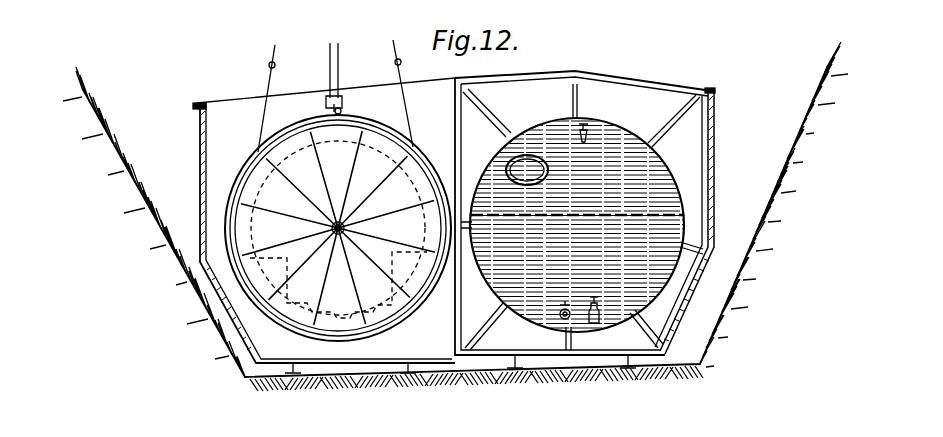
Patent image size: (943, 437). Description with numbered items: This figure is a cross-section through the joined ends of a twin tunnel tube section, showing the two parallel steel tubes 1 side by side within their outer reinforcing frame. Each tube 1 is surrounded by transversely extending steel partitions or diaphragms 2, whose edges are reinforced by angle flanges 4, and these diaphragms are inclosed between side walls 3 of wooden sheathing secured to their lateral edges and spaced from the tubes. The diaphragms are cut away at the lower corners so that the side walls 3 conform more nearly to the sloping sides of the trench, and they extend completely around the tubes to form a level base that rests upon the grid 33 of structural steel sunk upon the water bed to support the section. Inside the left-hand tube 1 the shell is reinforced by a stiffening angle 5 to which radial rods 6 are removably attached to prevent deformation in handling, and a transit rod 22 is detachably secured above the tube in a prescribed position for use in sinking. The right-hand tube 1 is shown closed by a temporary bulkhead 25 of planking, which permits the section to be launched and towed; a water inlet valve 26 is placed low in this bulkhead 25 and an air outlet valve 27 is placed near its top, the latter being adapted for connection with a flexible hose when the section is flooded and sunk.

The tube 1 is at (247, 298).
The partition or diaphragm 2 is at (213, 122).
The side wall 3 is at (203, 152).
The angle flange 4 is at (708, 103).
The stiffening angle 5 is at (420, 181).
The radial rod 6 is at (320, 165).
The transit rod 22 is at (336, 43).
The temporary bulkhead 25 is at (510, 263).
The water inlet valve 26 is at (598, 328).
The air outlet valve 27 is at (590, 125).
The grid 33 is at (297, 369).